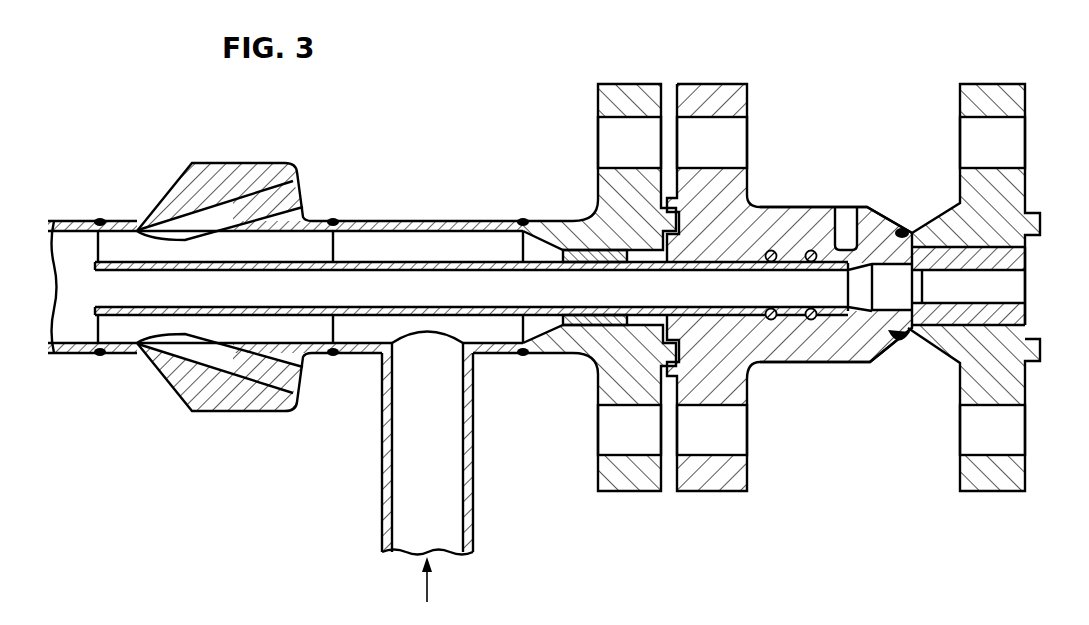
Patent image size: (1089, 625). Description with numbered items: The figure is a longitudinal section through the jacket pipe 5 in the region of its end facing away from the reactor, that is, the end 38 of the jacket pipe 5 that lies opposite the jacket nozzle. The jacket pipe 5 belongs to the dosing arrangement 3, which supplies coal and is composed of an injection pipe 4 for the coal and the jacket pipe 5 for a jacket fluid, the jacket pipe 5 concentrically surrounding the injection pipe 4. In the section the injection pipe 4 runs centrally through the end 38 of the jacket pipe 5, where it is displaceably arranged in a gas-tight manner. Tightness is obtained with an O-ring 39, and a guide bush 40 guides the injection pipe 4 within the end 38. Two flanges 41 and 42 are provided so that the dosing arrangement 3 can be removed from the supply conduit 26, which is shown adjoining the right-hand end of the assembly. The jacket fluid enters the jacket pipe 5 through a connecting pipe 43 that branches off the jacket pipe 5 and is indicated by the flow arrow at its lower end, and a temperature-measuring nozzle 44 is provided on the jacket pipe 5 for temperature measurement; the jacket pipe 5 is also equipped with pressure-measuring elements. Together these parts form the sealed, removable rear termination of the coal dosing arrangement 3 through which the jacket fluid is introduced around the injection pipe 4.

The dosing arrangement 3 is at (292, 156).
The injection pipe 4 is at (432, 262).
The jacket pipe 5 is at (367, 352).
The supply conduit 26 is at (1028, 313).
The end of the jacket pipe 38 is at (846, 372).
The O-ring 39 is at (811, 250).
The guide bush 40 is at (593, 325).
The flange 41 is at (603, 95).
The flange 42 is at (737, 98).
The connecting pipe 43 is at (470, 490).
The temperature-measuring nozzle 44 is at (295, 183).